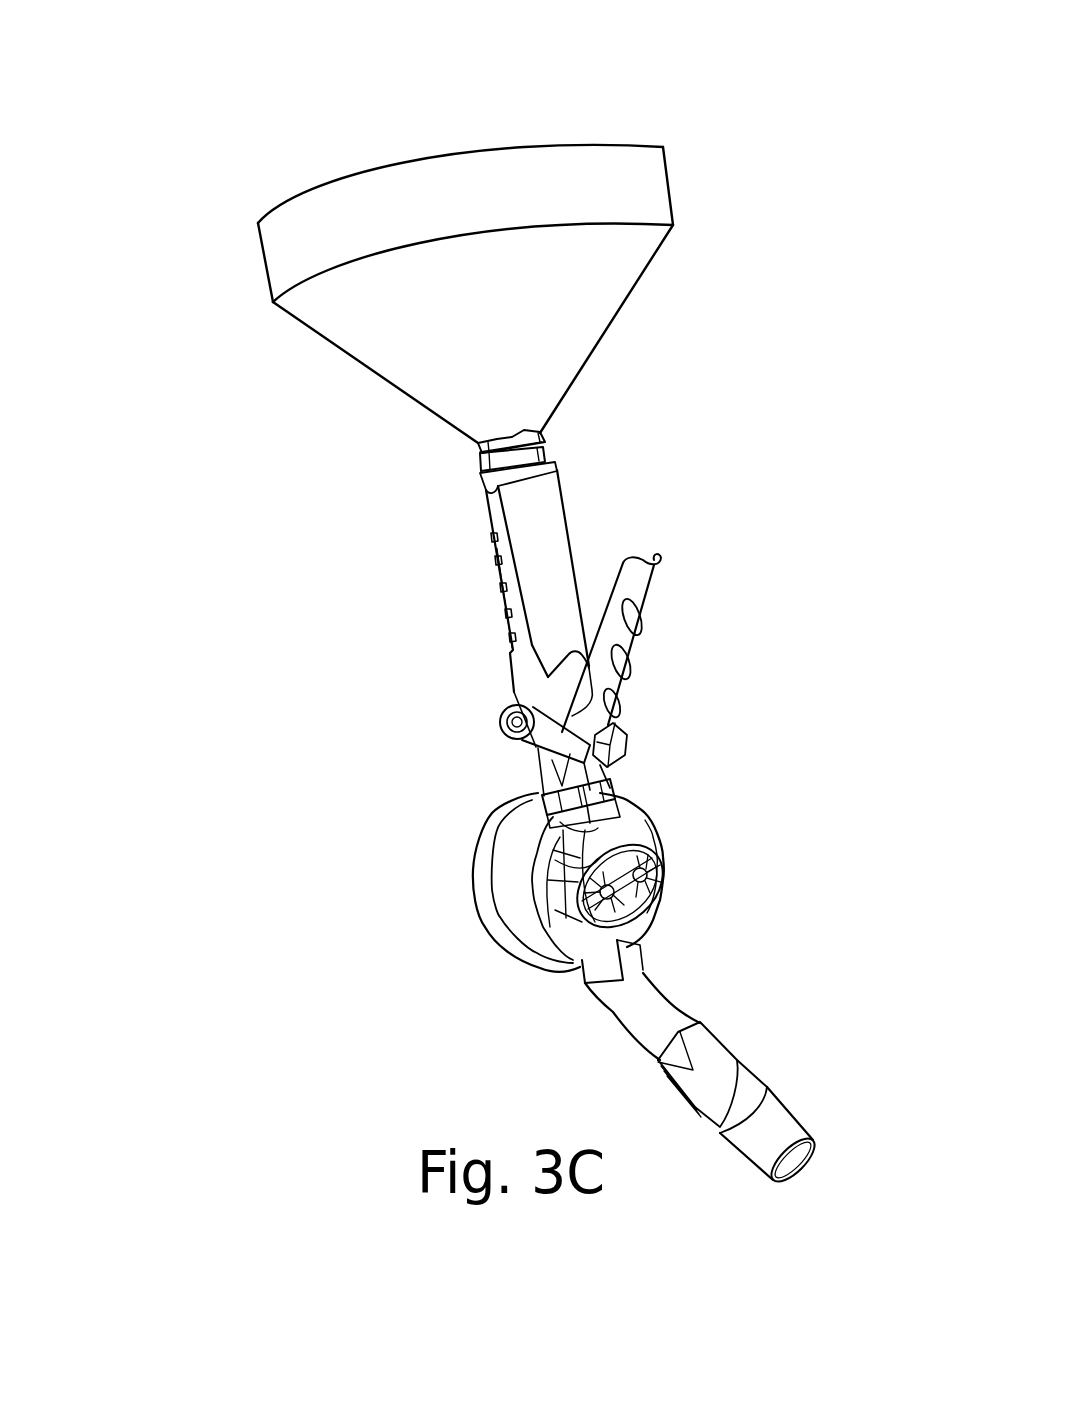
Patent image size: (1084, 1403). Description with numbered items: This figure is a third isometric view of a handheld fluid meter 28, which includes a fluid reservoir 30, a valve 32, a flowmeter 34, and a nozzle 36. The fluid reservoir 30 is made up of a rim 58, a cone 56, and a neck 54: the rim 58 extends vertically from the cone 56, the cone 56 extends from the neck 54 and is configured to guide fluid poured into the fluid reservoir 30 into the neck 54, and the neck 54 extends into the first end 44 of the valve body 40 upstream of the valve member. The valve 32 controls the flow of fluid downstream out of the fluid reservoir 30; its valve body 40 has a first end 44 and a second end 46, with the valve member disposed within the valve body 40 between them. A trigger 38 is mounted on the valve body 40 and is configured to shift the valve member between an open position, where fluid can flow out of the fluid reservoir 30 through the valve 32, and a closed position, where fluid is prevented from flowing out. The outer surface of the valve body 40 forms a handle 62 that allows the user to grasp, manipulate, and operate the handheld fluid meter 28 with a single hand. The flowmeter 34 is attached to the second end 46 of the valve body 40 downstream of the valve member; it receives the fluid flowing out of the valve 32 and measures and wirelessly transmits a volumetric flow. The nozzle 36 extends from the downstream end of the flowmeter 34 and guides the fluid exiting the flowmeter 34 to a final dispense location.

The handheld fluid meter 28 is at (210, 113).
The fluid reservoir 30 is at (690, 177).
The rim 58 is at (490, 190).
The cone 56 is at (580, 300).
The neck 54 is at (547, 433).
The first end 44 is at (480, 478).
The valve 32 is at (585, 506).
The valve body 40 is at (476, 527).
The handle 62 is at (497, 565).
The trigger 38 is at (635, 580).
The second end 46 is at (544, 795).
The flowmeter 34 is at (452, 854).
The nozzle 36 is at (737, 1078).